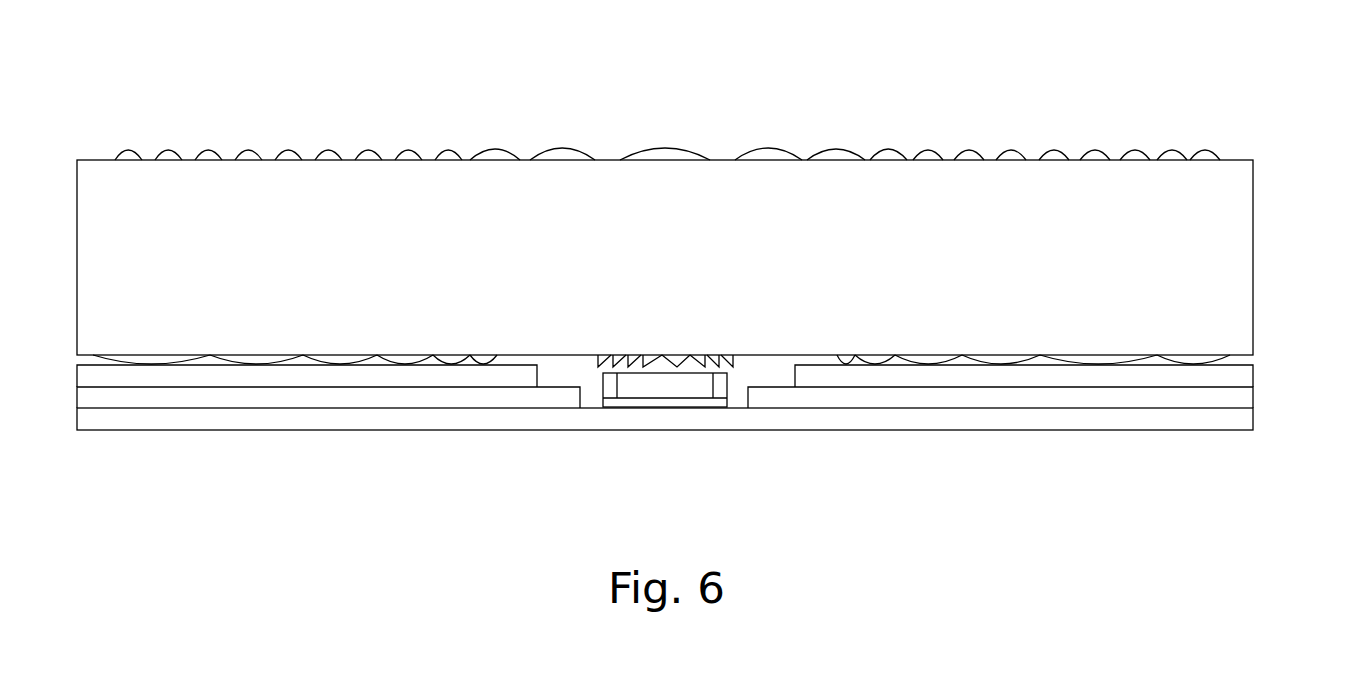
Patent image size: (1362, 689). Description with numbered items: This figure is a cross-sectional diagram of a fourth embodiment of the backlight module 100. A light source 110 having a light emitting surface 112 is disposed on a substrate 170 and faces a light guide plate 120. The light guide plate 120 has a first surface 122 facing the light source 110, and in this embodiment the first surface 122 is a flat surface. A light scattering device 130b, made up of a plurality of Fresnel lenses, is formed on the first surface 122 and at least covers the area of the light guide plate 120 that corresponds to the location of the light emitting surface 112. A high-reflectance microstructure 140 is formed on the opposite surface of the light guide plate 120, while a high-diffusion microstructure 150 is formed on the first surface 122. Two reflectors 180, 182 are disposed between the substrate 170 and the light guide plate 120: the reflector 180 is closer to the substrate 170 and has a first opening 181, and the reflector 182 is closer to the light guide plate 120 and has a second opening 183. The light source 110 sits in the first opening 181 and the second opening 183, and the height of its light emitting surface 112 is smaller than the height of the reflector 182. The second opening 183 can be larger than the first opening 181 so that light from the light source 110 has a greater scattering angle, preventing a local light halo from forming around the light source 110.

The backlight module 100 is at (163, 102).
The light source 110 is at (670, 385).
The light emitting surface 112 is at (700, 390).
The light guide plate 120 is at (1237, 265).
The first surface 122 is at (1127, 355).
The light scattering device 130b is at (701, 353).
The high-reflectance microstructure 140 is at (663, 157).
The high-diffusion microstructure 150 is at (335, 365).
The substrate 170 is at (948, 418).
The reflector 180 is at (1077, 397).
The first opening 181 is at (592, 390).
The reflector 182 is at (1233, 375).
The second opening 183 is at (567, 380).